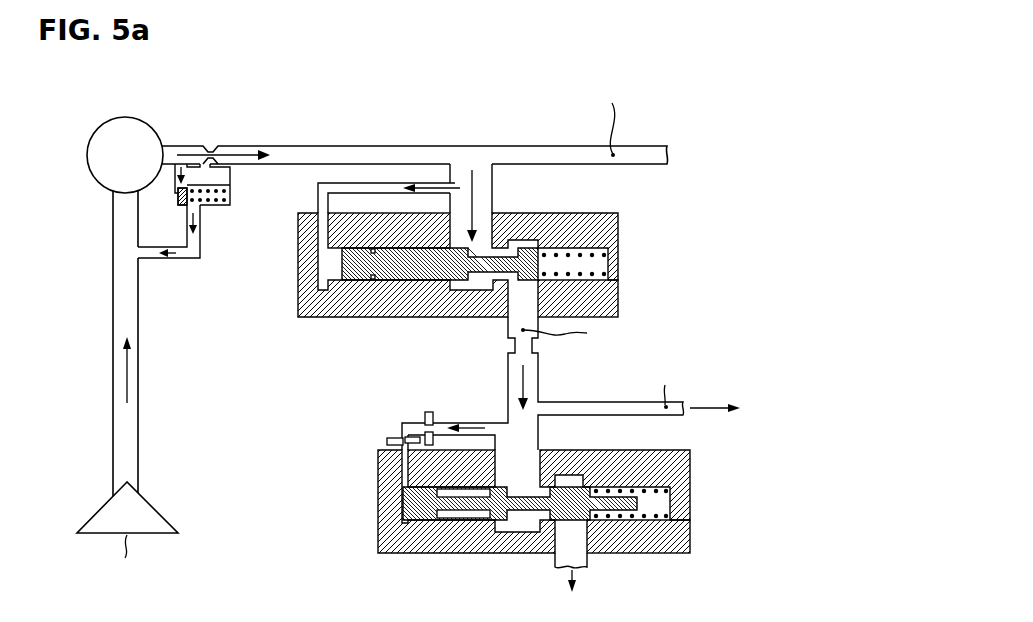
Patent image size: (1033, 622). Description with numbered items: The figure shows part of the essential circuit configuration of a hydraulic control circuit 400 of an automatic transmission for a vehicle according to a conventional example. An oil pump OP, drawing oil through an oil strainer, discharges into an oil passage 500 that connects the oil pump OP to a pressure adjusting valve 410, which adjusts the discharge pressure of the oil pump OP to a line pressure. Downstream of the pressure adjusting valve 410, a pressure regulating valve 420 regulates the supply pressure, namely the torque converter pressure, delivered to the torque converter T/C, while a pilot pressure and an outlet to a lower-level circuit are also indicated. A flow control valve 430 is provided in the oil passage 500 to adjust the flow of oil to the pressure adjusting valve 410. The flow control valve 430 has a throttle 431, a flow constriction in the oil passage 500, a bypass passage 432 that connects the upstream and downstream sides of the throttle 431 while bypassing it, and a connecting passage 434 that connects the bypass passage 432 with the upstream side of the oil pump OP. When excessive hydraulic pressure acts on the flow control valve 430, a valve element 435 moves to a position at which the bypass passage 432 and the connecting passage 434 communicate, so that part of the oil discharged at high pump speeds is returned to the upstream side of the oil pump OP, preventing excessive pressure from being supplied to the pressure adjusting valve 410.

The hydraulic control circuit 400 is at (540, 108).
The pressure adjusting valve 410 is at (304, 324).
The pressure regulating valve 420 is at (378, 543).
The flow control valve 430 is at (240, 128).
The throttle 431 is at (222, 147).
The bypass passage 432 is at (230, 178).
The connecting passage 434 is at (193, 259).
The valve element 435 is at (180, 208).
The oil passage 500 is at (332, 149).